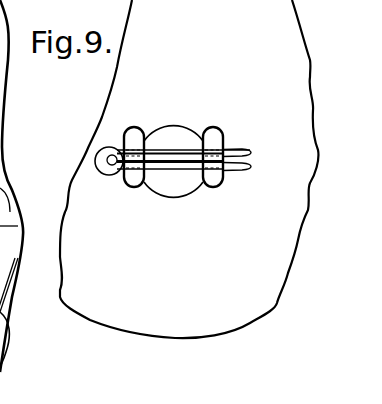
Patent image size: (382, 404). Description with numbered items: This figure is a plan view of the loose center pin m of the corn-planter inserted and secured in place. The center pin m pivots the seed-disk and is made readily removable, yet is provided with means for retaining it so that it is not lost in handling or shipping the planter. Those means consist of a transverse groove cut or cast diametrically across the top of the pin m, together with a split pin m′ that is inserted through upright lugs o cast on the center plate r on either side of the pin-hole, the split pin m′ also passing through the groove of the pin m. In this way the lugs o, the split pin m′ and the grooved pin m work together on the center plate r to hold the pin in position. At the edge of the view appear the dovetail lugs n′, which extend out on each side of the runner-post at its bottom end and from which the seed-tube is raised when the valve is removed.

The loose center pin m is at (165, 131).
The upright lugs o is at (129, 138).
The split pin m′ is at (104, 173).
The center plate r is at (189, 169).
The dovetail lugs n′ is at (8, 353).